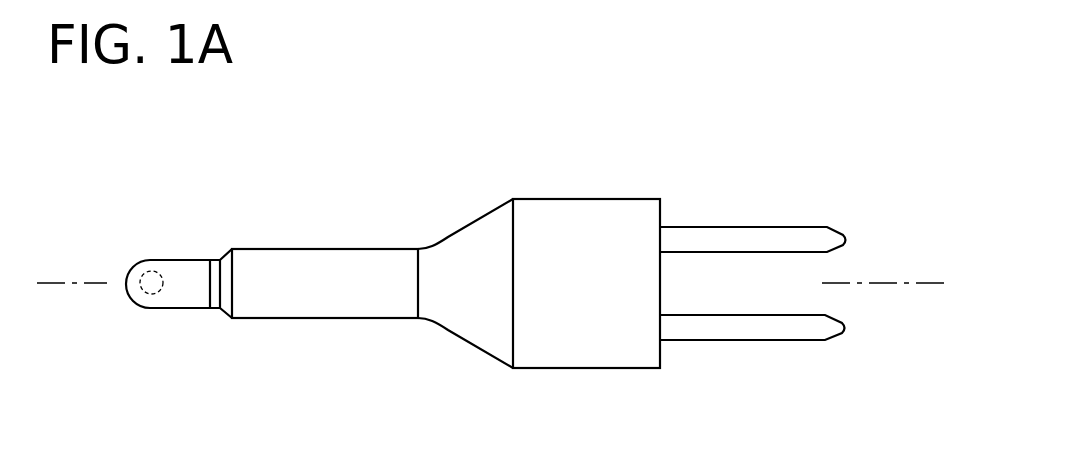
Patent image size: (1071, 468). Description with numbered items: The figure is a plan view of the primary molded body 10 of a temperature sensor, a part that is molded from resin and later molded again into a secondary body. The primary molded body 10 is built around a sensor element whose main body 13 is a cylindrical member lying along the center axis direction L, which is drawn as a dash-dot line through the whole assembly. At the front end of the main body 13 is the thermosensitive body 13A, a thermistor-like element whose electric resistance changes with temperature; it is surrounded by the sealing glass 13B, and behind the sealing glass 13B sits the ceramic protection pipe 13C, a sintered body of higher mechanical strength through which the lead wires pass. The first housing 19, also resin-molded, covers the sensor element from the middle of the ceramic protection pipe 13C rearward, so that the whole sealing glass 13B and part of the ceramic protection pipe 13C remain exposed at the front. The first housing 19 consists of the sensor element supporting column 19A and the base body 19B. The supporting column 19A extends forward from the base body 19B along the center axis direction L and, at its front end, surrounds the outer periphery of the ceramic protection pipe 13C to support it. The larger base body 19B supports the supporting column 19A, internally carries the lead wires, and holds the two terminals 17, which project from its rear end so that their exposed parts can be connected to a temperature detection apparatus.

The primary molded body 10 is at (673, 125).
The main body 13 is at (181, 246).
The thermosensitive body 13A is at (148, 310).
The sealing glass 13B is at (187, 310).
The ceramic protection pipe 13C is at (217, 310).
The terminals 17 is at (738, 227).
The first housing 19 is at (458, 220).
The sensor element supporting column 19A is at (317, 247).
The base body 19B is at (578, 199).
The center axis direction L is at (62, 285).